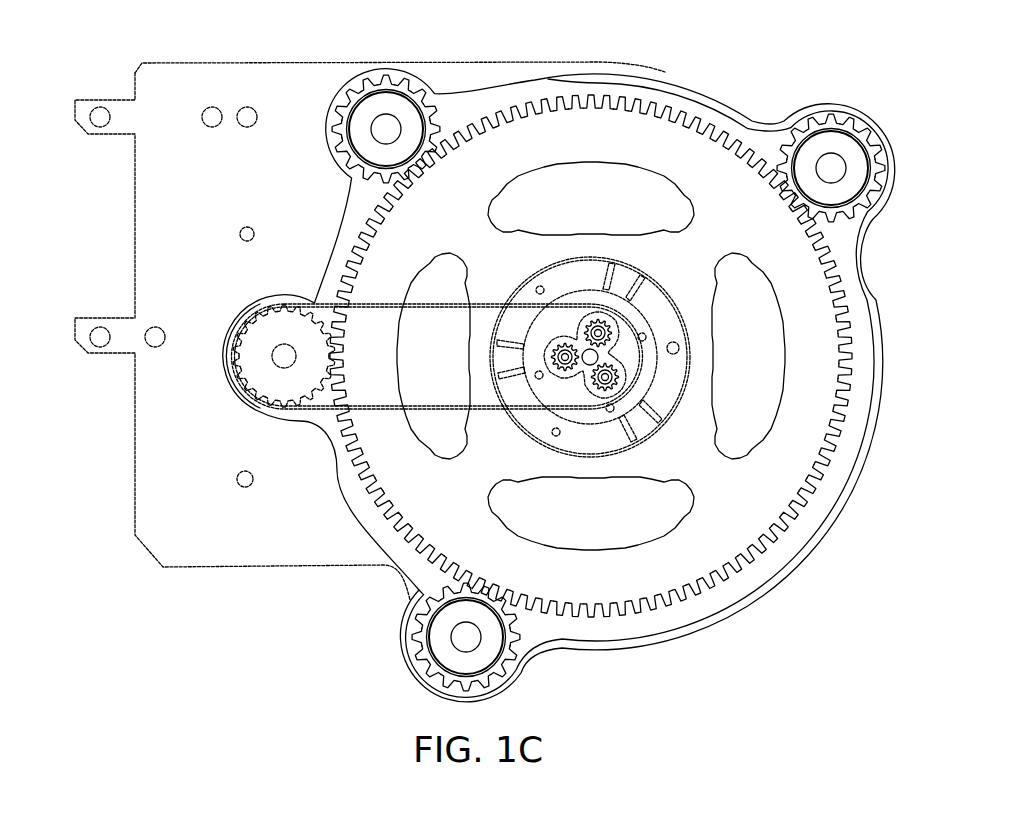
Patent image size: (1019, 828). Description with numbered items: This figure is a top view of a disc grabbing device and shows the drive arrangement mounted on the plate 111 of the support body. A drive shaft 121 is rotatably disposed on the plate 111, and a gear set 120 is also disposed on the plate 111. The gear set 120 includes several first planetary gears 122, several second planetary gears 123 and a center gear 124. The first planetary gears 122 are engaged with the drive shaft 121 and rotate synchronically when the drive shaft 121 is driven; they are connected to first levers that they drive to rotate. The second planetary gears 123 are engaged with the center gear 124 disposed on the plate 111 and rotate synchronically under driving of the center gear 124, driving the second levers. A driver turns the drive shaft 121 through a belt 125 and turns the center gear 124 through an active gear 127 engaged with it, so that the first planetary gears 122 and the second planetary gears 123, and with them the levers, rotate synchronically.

The plate 111 is at (877, 388).
The gear set 120 is at (972, 20).
The drive shaft 121 is at (578, 350).
The first planetary gears 122 is at (568, 347).
The second planetary gears 123 is at (400, 77).
The center gear 124 is at (722, 160).
The belt 125 is at (380, 410).
The active gear 127 is at (262, 380).